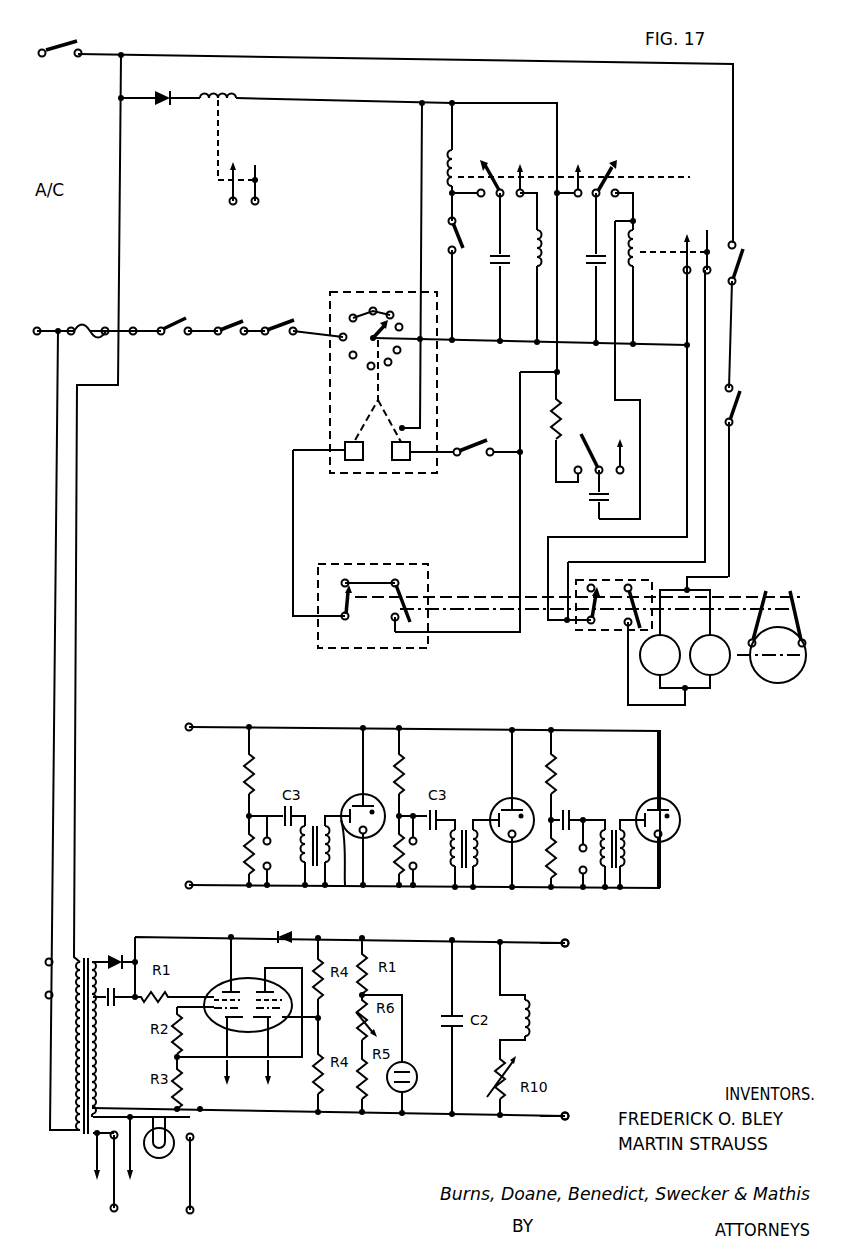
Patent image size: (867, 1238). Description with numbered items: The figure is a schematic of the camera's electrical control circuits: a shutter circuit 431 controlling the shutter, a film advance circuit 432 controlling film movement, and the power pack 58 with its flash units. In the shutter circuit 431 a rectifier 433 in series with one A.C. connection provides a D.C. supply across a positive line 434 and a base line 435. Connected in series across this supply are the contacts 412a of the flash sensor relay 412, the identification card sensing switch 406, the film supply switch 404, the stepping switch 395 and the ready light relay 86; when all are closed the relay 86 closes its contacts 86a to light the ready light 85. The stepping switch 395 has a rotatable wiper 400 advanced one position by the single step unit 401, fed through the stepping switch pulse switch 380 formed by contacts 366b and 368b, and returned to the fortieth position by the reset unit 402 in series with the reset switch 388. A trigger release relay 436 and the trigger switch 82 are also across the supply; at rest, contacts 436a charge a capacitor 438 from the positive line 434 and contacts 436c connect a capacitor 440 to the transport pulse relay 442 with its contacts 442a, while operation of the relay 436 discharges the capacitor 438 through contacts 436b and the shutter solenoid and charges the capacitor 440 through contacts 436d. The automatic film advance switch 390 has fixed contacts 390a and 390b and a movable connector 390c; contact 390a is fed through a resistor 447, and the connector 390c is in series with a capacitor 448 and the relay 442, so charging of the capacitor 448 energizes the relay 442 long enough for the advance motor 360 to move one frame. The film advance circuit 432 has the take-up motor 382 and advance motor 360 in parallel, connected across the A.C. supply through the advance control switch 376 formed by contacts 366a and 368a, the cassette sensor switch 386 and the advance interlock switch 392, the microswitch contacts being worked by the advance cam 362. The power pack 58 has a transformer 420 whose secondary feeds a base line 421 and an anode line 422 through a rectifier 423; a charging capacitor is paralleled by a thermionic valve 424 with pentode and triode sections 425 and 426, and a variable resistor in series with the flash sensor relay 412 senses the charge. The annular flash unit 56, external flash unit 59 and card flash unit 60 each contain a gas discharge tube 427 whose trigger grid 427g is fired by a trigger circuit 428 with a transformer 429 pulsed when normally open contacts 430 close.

The rectifier 433 is at (168, 106).
The ready light relay 86 is at (222, 97).
The positive line 434 is at (310, 106).
The set of contacts 86a is at (238, 205).
The trigger release relay 436 is at (448, 168).
The set of contacts 436a is at (484, 158).
The set of contacts 436b is at (522, 160).
The set of contacts 436c is at (618, 164).
The set of contacts 436d is at (580, 160).
The transport pulse relay 442 is at (636, 232).
The relay contact 442a is at (688, 235).
The advance interlock switch 392 is at (746, 262).
The cassette sensor switch 386 is at (742, 410).
The trigger switch 82 is at (447, 240).
The capacitor 438 is at (509, 267).
The capacitor 440 is at (596, 258).
The set of normally open contacts 412a is at (169, 323).
The identification card sensing microswitch 406 is at (233, 338).
The base line 435 is at (217, 323).
The film supply microswitch 404 is at (280, 323).
The stepping switch 395 is at (330, 393).
The rotatable wiper 400 is at (358, 306).
The stepping switch single step unit 401 is at (353, 461).
The stepping switch reset unit 402 is at (401, 461).
The reset microswitch 388 is at (476, 441).
The resistor 447 is at (566, 410).
The fixed contact 390a is at (578, 466).
The fixed contact 390b is at (622, 452).
The movable central connector 390c is at (590, 436).
The automatic film advance switch 390 is at (618, 478).
The capacitor 448 is at (590, 500).
The stepping switch pulse switch 380 is at (317, 625).
The set of contacts 366b is at (343, 597).
The set of contacts 368b is at (402, 594).
The advance control switch 376 is at (606, 632).
The set of contacts 366a is at (598, 602).
The set of contacts 368a is at (675, 562).
The take-up motor 382 is at (642, 663).
The advance motor 360 is at (722, 664).
The advance cam 362 is at (795, 668).
The shutter circuit 431 is at (490, 696).
The film advance circuit 432 is at (807, 748).
The anode line 422 is at (267, 724).
The base line 421 is at (438, 892).
The trigger circuit 428 is at (255, 804).
The set of normally open contacts 430 is at (270, 852).
The transformer 429 is at (310, 818).
The annular electronic flash unit 56 is at (350, 792).
The gas filled discharge tube 427 is at (383, 835).
The trigger grid 427g is at (342, 887).
The identification card flash unit 60 is at (498, 795).
The external flash unit 59 is at (647, 797).
The transformer 420 is at (80, 958).
The rectifier 423 is at (114, 955).
The thermionic valve 424 is at (219, 972).
The pentode section 425 is at (206, 986).
The triode section 426 is at (255, 978).
The ready light 85 is at (176, 1157).
The flash sensor relay 412 is at (533, 1022).
The power pack 58 is at (338, 1120).